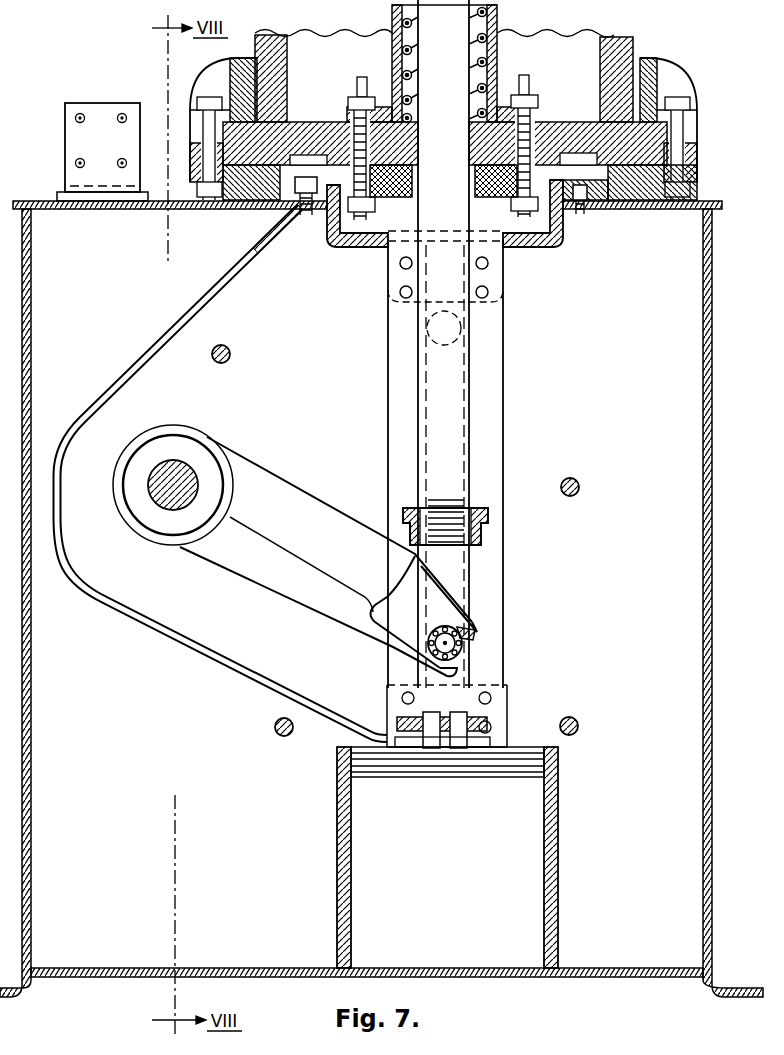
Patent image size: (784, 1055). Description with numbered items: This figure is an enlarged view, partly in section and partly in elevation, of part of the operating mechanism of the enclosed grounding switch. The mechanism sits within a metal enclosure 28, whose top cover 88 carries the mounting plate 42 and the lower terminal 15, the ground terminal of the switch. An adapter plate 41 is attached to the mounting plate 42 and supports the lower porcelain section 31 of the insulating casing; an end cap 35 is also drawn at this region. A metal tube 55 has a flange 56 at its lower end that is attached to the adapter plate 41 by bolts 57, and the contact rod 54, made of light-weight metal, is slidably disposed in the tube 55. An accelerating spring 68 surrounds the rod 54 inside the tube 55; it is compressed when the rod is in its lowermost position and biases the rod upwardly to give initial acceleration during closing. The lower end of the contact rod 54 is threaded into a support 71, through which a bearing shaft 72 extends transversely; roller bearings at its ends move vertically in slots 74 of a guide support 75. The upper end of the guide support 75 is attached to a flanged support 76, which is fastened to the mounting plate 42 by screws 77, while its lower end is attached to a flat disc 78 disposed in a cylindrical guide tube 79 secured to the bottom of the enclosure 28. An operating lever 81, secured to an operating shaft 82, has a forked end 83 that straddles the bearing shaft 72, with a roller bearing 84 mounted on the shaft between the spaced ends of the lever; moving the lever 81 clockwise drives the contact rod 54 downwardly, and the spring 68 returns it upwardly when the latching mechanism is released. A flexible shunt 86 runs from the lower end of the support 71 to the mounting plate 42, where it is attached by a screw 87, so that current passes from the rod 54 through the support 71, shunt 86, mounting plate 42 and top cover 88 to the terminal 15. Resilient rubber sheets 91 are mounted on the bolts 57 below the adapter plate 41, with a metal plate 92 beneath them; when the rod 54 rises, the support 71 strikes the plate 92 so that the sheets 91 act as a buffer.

The lower terminal 15 is at (68, 133).
The metal enclosure 28 is at (713, 577).
The lower porcelain section 31 is at (636, 45).
The end cap 35 is at (661, 62).
The adapter plate 41 is at (576, 128).
The mounting plate 42 is at (646, 210).
The contact rod 54 is at (394, 42).
The metal tube 55 is at (497, 63).
The flange 56 is at (350, 112).
The bolts 57 is at (356, 81).
The accelerating spring 68 is at (497, 32).
The support 71 is at (488, 532).
The bearing shaft 72 is at (463, 645).
The slots 74 is at (471, 583).
The guide support 75 is at (400, 377).
The flanged support 76 is at (545, 244).
The screws 77 is at (583, 214).
The flat disc 78 is at (515, 756).
The cylindrical guide tube 79 is at (345, 876).
The operating lever 81 is at (284, 490).
The operating shaft 82 is at (167, 478).
The forked end 83 is at (400, 655).
The roller bearing 84 is at (478, 633).
The flexible shunt 86 is at (197, 648).
The screw 87 is at (311, 215).
The top cover 88 is at (222, 209).
The resilient sheets 91 is at (395, 198).
The metal plate 92 is at (500, 198).